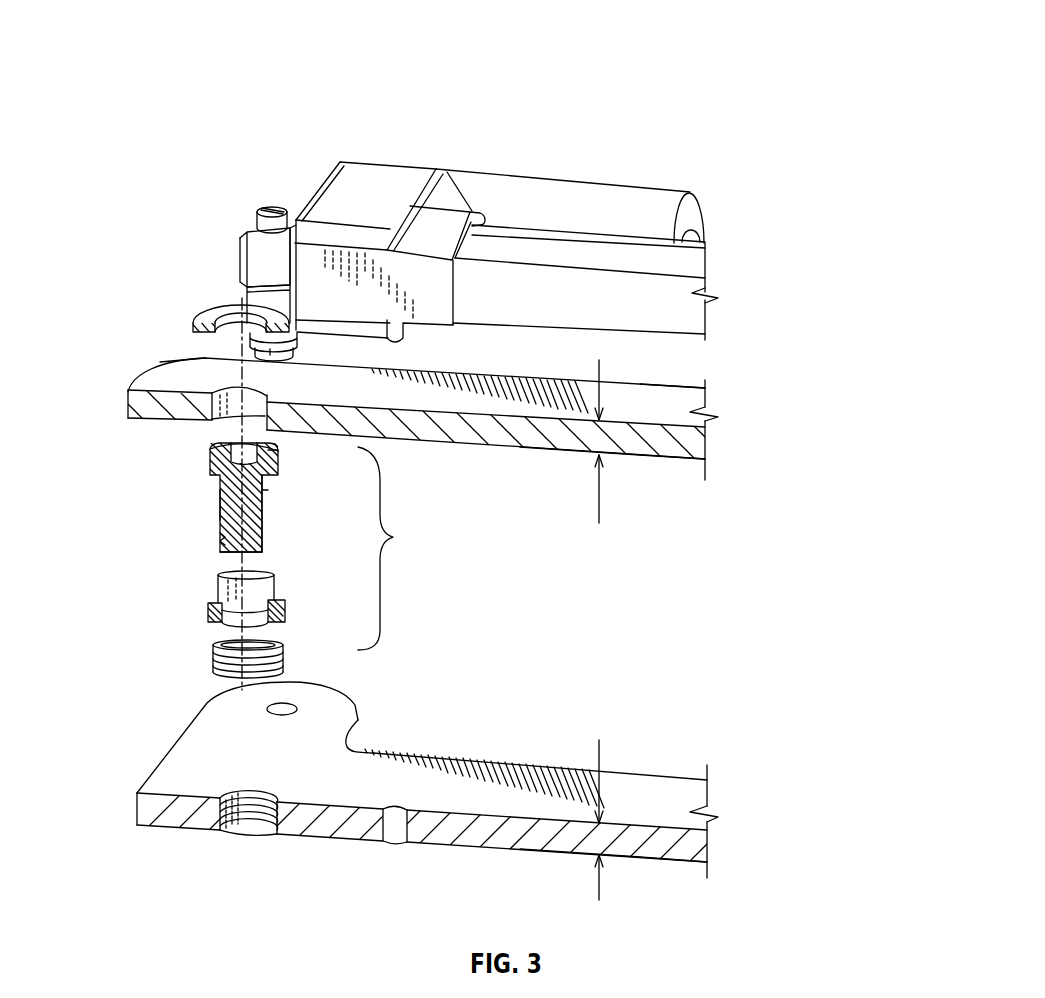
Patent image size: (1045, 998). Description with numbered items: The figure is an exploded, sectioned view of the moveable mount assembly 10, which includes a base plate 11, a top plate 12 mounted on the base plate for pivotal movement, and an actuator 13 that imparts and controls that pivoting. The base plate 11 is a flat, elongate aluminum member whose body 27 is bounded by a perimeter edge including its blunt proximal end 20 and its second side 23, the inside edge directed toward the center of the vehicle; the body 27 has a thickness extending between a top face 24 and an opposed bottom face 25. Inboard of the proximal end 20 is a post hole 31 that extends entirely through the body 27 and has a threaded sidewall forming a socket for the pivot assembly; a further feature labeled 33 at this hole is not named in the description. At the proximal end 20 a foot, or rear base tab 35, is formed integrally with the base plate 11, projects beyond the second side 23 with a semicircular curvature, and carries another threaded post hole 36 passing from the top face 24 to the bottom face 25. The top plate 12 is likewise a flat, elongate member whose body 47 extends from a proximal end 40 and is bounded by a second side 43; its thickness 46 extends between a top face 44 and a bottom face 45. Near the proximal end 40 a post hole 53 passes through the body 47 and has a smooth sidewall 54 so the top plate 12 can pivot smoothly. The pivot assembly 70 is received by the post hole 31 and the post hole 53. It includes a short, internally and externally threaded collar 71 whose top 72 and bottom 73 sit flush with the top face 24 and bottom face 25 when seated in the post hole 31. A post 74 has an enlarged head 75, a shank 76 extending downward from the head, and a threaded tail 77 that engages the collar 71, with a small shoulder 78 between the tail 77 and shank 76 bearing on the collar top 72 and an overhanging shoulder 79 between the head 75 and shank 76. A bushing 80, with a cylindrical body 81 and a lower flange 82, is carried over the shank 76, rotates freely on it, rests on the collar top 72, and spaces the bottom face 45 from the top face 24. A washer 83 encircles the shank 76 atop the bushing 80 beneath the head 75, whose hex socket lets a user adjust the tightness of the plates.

The moveable mount assembly 10 is at (796, 80).
The base plate 11 is at (720, 845).
The top plate 12 is at (722, 437).
The actuator 13 is at (714, 236).
The proximal end 20 is at (439, 801).
The second side 23 is at (510, 767).
The top face 24 is at (673, 815).
The bottom face 25 is at (673, 866).
The body 27 is at (572, 850).
The post hole 31 is at (243, 833).
The threaded bore 33 is at (265, 832).
The rear base tab 35 is at (365, 726).
The post hole 36 is at (305, 711).
The proximal end 40 is at (429, 427).
The second side 43 is at (507, 377).
The top face 44 is at (670, 412).
The bottom face 45 is at (673, 462).
The thickness 46 is at (599, 513).
The body 47 is at (565, 442).
The post hole 53 is at (210, 378).
The smooth sidewall 54 is at (219, 415).
The pivot assembly 70 is at (267, 512).
The collar 71 is at (285, 660).
The top 72 is at (250, 678).
The bottom 73 is at (222, 682).
The post 74 is at (270, 507).
The head 75 is at (254, 503).
The shank 76 is at (220, 502).
The tail 77 is at (225, 548).
The shoulder 78 is at (220, 530).
The overhanging shoulder 79 is at (277, 483).
The bushing 80 is at (253, 602).
The cylindrical body 81 is at (218, 588).
The lower flange 82 is at (212, 622).
The washer 83 is at (216, 303).